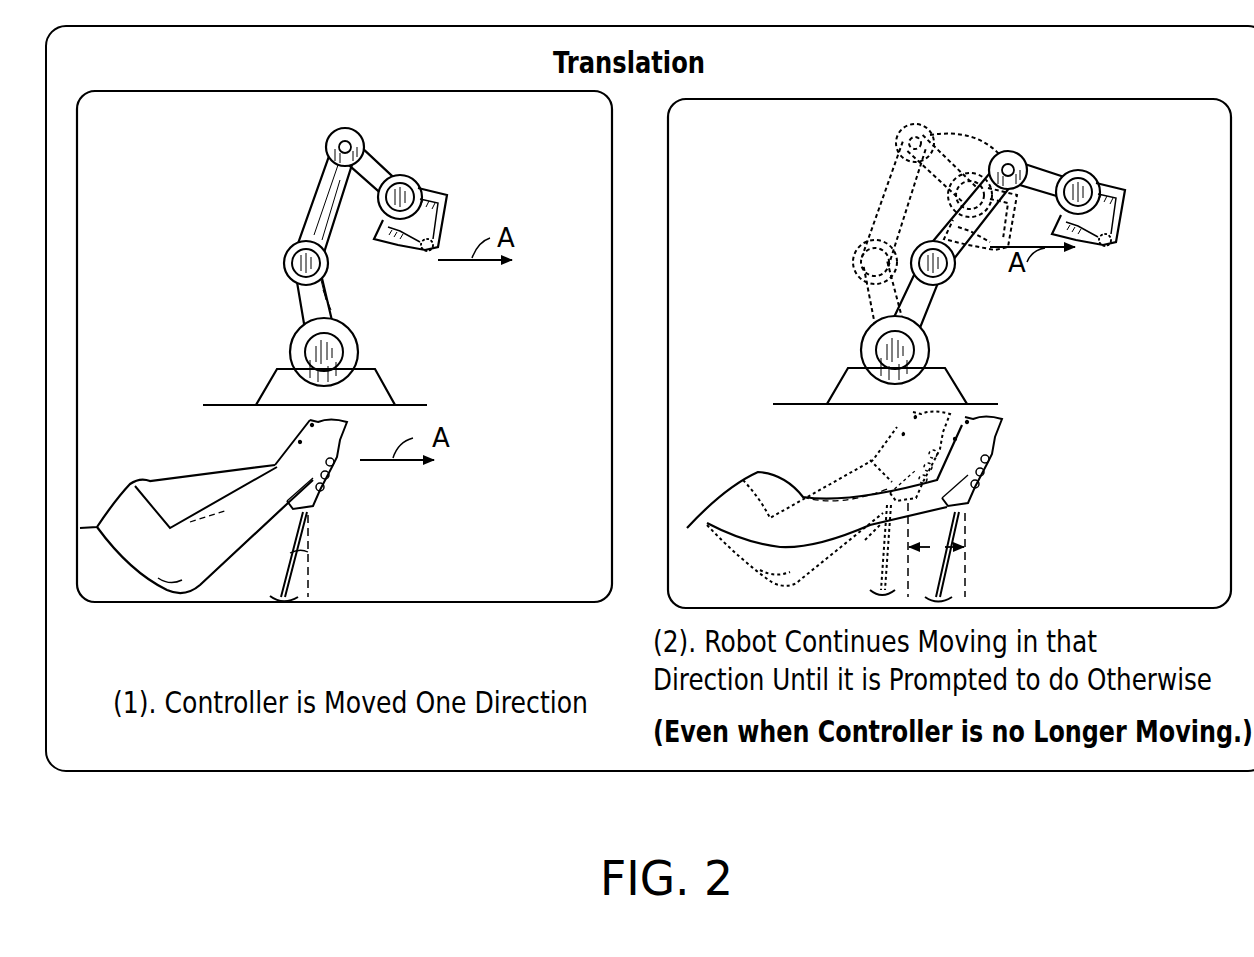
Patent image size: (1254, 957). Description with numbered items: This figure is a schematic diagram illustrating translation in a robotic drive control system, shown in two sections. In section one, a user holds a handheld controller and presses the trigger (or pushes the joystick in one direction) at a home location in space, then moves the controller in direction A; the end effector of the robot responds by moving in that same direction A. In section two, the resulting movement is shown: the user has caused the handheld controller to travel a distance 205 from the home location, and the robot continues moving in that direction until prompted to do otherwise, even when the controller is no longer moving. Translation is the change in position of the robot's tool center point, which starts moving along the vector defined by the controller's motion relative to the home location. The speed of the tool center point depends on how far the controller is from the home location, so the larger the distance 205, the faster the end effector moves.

The distance 205 is at (940, 562).